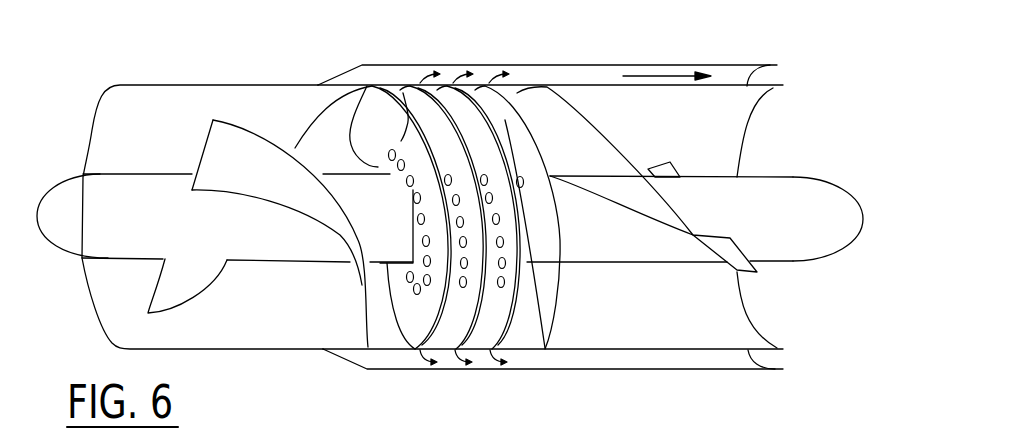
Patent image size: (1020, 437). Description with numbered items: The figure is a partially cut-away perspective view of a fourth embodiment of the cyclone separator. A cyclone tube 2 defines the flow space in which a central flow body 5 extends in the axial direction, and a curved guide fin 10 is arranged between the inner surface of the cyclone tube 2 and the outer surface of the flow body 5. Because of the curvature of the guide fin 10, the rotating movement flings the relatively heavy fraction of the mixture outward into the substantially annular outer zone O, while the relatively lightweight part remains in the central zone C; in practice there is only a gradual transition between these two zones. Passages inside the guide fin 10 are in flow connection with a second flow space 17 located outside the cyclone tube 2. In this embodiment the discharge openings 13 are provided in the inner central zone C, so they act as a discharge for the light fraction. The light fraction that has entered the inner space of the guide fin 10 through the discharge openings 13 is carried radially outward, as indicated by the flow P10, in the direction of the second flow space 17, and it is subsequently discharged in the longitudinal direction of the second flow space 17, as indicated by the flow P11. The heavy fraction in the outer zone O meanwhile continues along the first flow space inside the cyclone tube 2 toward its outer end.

The cyclone tube 2 is at (250, 349).
The central flow body 5 is at (286, 262).
The curved guide fin 10 is at (320, 110).
The discharge openings 13 is at (412, 213).
The second flow space 17 is at (590, 78).
The central zone C is at (367, 86).
The outer zone O is at (403, 93).
The radially outward discharge flow P10 is at (455, 80).
The longitudinal discharge flow P11 is at (657, 75).